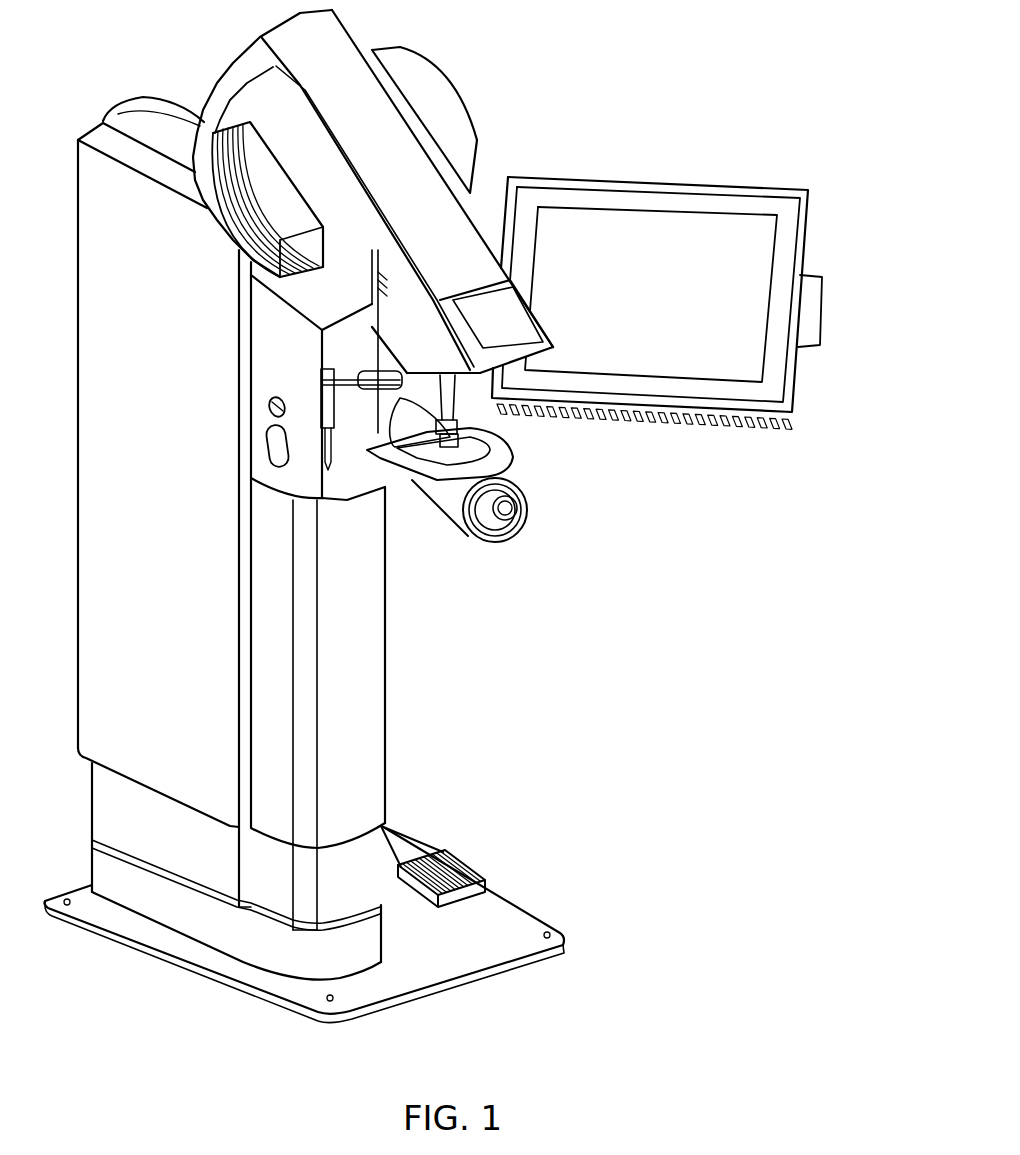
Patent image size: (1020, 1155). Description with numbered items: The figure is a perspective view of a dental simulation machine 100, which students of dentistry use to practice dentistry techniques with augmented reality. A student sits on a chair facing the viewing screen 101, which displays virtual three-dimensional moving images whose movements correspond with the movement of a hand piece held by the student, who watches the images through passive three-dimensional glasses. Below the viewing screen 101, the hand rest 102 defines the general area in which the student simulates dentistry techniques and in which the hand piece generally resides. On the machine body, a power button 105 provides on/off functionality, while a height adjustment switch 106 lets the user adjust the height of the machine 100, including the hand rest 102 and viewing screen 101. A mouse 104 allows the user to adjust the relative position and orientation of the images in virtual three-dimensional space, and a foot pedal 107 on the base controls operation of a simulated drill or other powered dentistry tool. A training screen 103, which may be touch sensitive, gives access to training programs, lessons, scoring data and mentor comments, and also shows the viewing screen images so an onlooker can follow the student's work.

The dental simulation machine 100 is at (475, 516).
The viewing screen 101 is at (510, 315).
The hand rest 102 is at (478, 430).
The training screen 103 is at (728, 267).
The mouse 104 is at (508, 506).
The power button 105 is at (270, 407).
The height adjustment switch 106 is at (267, 457).
The foot pedal 107 is at (467, 863).